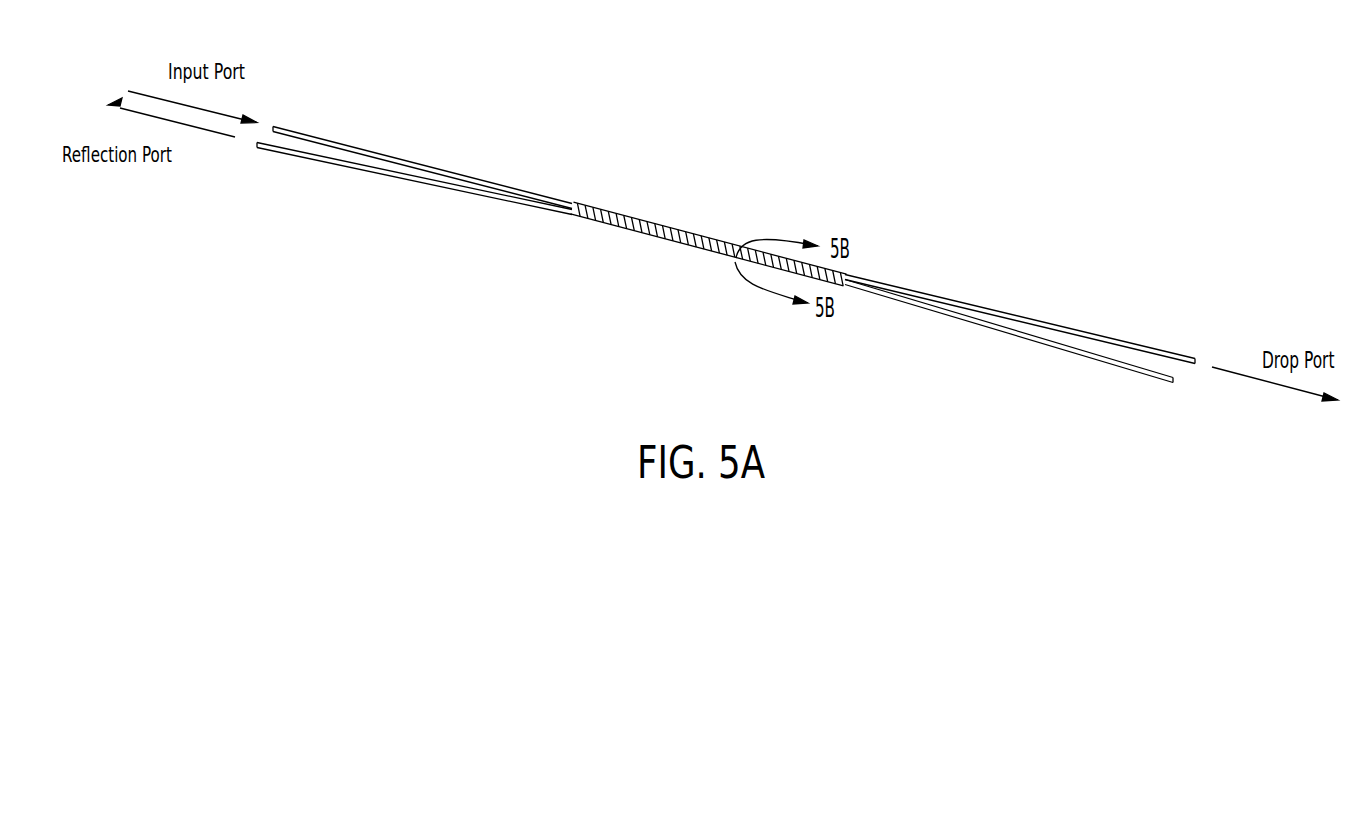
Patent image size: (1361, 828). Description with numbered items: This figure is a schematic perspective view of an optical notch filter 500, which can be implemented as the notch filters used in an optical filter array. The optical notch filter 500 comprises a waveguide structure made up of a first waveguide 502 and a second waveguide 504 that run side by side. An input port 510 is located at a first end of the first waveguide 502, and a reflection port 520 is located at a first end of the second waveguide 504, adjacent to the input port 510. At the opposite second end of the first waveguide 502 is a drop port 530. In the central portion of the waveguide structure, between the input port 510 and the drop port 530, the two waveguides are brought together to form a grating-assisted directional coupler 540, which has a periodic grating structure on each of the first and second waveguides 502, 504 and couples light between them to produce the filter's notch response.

The optical notch filter 500 is at (530, 152).
The first waveguide 502 is at (452, 153).
The second waveguide 504 is at (470, 212).
The input port 510 is at (273, 127).
The reflection port 520 is at (258, 147).
The drop port 530 is at (1185, 365).
The grating-assisted directional coupler 540 is at (724, 248).